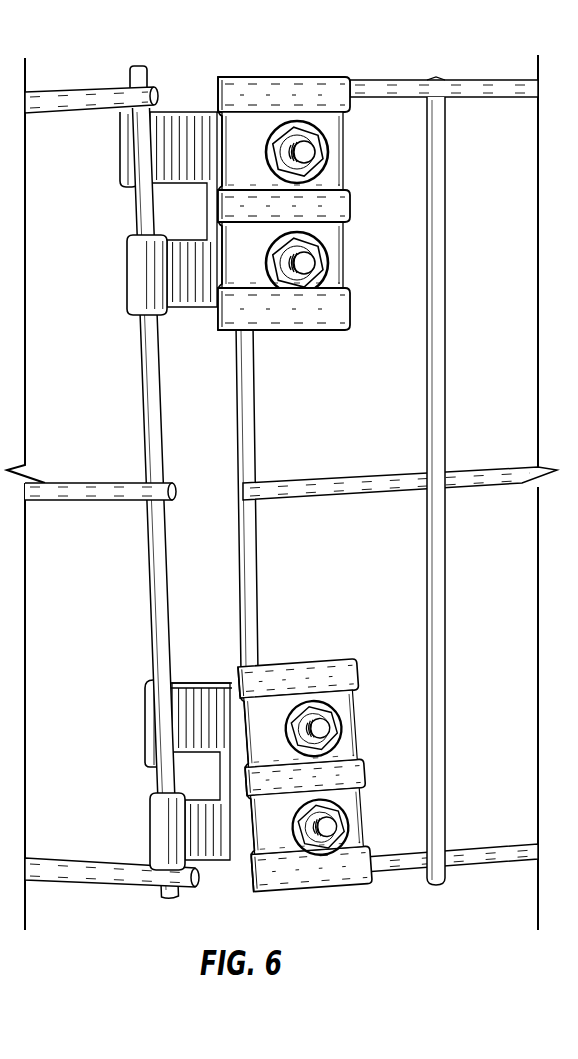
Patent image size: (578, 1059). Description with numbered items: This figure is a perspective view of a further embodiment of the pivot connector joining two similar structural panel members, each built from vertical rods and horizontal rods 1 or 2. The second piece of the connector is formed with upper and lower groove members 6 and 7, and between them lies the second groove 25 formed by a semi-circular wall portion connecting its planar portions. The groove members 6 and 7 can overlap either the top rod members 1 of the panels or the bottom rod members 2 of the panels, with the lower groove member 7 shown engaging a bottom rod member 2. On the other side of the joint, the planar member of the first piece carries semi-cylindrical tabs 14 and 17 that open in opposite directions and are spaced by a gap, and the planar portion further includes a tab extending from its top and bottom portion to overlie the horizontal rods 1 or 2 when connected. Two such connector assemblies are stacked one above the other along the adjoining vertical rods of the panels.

The horizontal rod 1 is at (407, 94).
The bottom rod member 2 is at (460, 852).
The upper groove member 6 is at (285, 472).
The lower groove member 7 is at (347, 300).
The tab 14 is at (148, 702).
The tab 17 is at (152, 822).
The second groove 25 is at (345, 207).